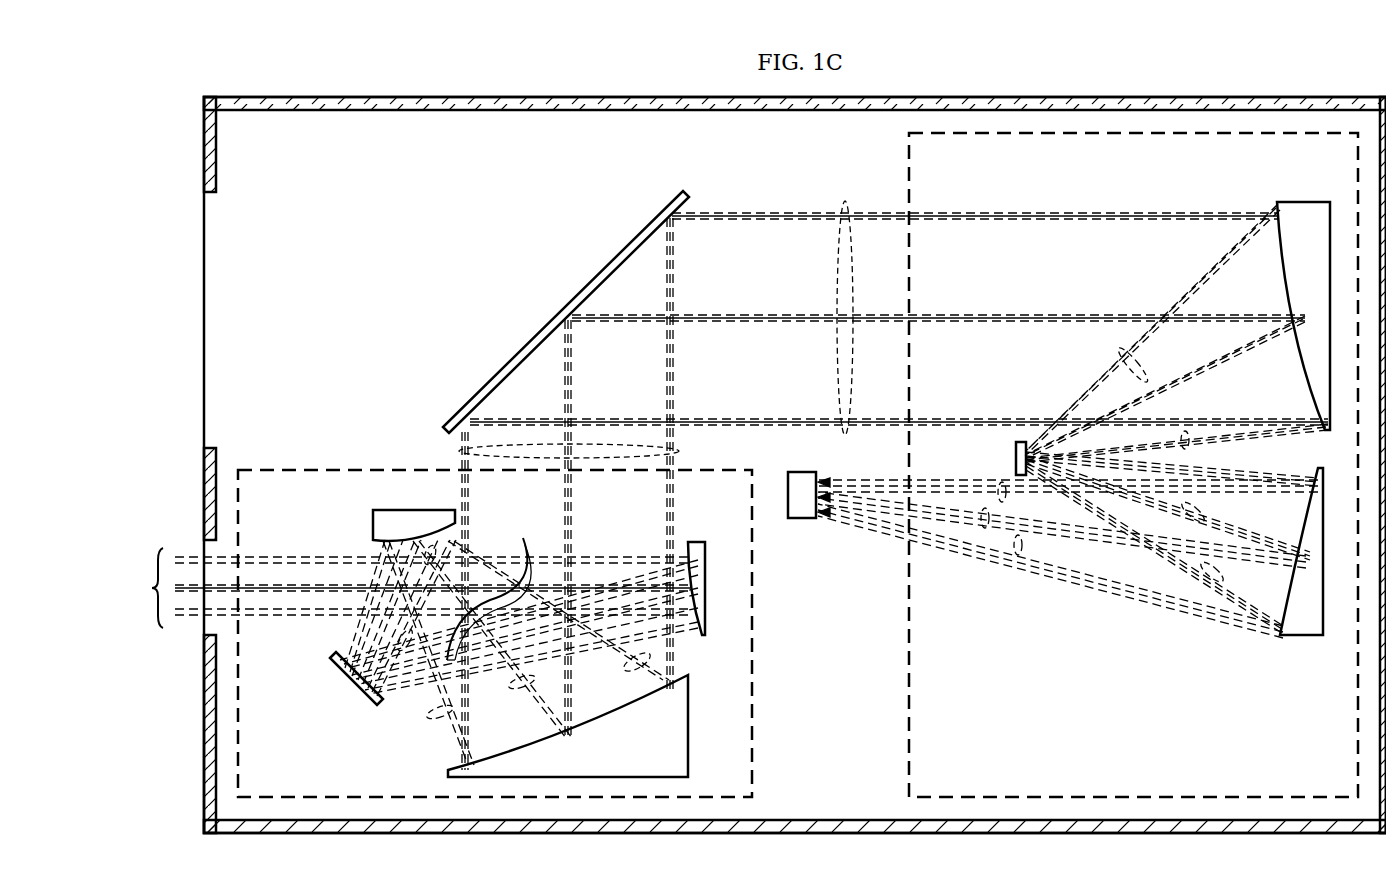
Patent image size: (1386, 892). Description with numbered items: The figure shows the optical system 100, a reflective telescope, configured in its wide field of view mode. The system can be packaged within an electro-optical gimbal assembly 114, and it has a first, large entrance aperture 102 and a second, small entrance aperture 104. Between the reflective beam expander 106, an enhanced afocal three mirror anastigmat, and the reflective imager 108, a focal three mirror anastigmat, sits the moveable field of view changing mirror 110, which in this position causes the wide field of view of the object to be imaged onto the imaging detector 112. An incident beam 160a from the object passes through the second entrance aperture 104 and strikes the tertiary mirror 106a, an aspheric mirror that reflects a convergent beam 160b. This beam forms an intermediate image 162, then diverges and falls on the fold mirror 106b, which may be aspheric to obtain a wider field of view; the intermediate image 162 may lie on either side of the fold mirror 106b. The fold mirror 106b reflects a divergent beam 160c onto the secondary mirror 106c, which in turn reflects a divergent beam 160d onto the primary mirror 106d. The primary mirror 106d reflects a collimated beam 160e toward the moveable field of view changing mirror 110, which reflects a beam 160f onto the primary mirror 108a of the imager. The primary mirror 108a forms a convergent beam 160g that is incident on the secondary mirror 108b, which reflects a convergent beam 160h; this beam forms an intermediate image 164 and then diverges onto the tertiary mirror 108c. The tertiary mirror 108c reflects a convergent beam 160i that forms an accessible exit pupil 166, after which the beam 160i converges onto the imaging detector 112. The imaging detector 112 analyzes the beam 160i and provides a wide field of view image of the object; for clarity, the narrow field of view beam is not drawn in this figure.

The optical system 100 is at (1228, 64).
The first entrance aperture 102 is at (213, 196).
The second entrance aperture 104 is at (212, 636).
The reflective beam expander 106 is at (752, 672).
The tertiary mirror 106a is at (700, 540).
The fold mirror 106b is at (345, 675).
The secondary mirror 106c is at (372, 515).
The primary mirror 106d is at (668, 758).
The reflective imager 108 is at (909, 616).
The primary mirror 108a is at (1305, 201).
The secondary mirror 108b is at (1012, 450).
The tertiary mirror 108c is at (1300, 636).
The moveable field of view changing mirror 110 is at (596, 292).
The imaging detector 112 is at (810, 520).
The electro-optical gimbal assembly 114 is at (570, 96).
The incident beam 160a is at (387, 588).
The convergent beam 160b is at (420, 680).
The divergent beam 160c is at (360, 622).
The divergent beam 160d is at (620, 670).
The collimated beam 160e is at (458, 451).
The beam 160f is at (845, 215).
The convergent beam 160g is at (1185, 445).
The convergent beam 160h is at (1190, 525).
The convergent beam 160i is at (1000, 505).
The intermediate image 162 is at (494, 583).
The intermediate image 164 is at (1028, 480).
The exit pupil 166 is at (1048, 500).